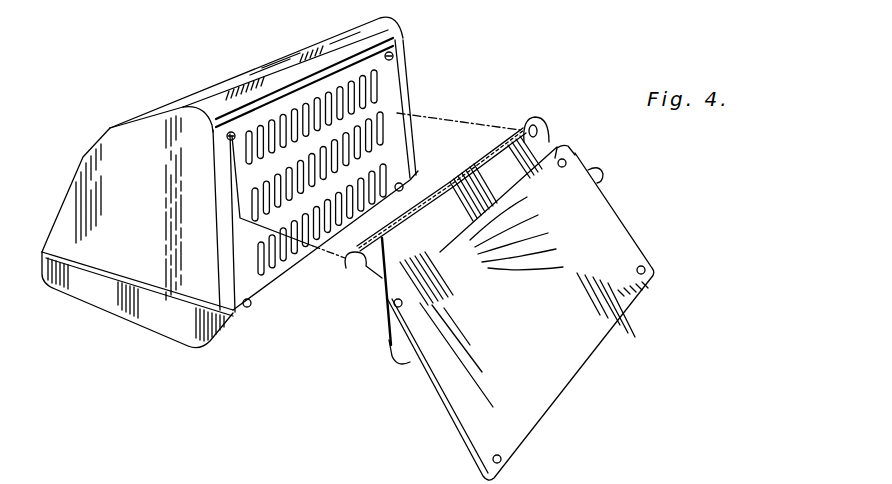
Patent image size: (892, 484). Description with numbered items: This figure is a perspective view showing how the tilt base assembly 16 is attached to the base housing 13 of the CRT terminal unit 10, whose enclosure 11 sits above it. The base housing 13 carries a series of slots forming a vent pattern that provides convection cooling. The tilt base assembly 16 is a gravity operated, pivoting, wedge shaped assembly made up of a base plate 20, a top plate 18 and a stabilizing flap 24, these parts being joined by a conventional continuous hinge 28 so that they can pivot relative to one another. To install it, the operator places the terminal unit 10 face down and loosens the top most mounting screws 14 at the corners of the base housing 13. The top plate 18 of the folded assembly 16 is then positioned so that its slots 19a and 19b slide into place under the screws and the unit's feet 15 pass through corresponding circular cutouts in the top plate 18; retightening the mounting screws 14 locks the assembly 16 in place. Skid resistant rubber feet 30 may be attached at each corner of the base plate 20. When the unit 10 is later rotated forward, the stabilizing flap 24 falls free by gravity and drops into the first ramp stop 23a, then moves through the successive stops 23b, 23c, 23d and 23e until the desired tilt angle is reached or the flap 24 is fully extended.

The CRT terminal unit 10 is at (78, 146).
The enclosure 11 is at (180, 98).
The base housing 13 is at (272, 279).
The mounting screws 14 is at (227, 139).
The feet 15 is at (247, 308).
The tilt base assembly 16 is at (611, 198).
The top plate 18 is at (546, 123).
The slot 19a is at (347, 263).
The slot 19b is at (527, 128).
The base plate 20 is at (561, 393).
The first ramp stop 23a is at (544, 266).
The ramp stop 23b is at (539, 248).
The ramp stop 23c is at (532, 236).
The ramp stop 23d is at (526, 223).
The ramp stop 23e is at (522, 210).
The stabilizing flap 24 is at (528, 160).
The continuous hinge 28 is at (464, 178).
The rubber feet 30 is at (566, 162).